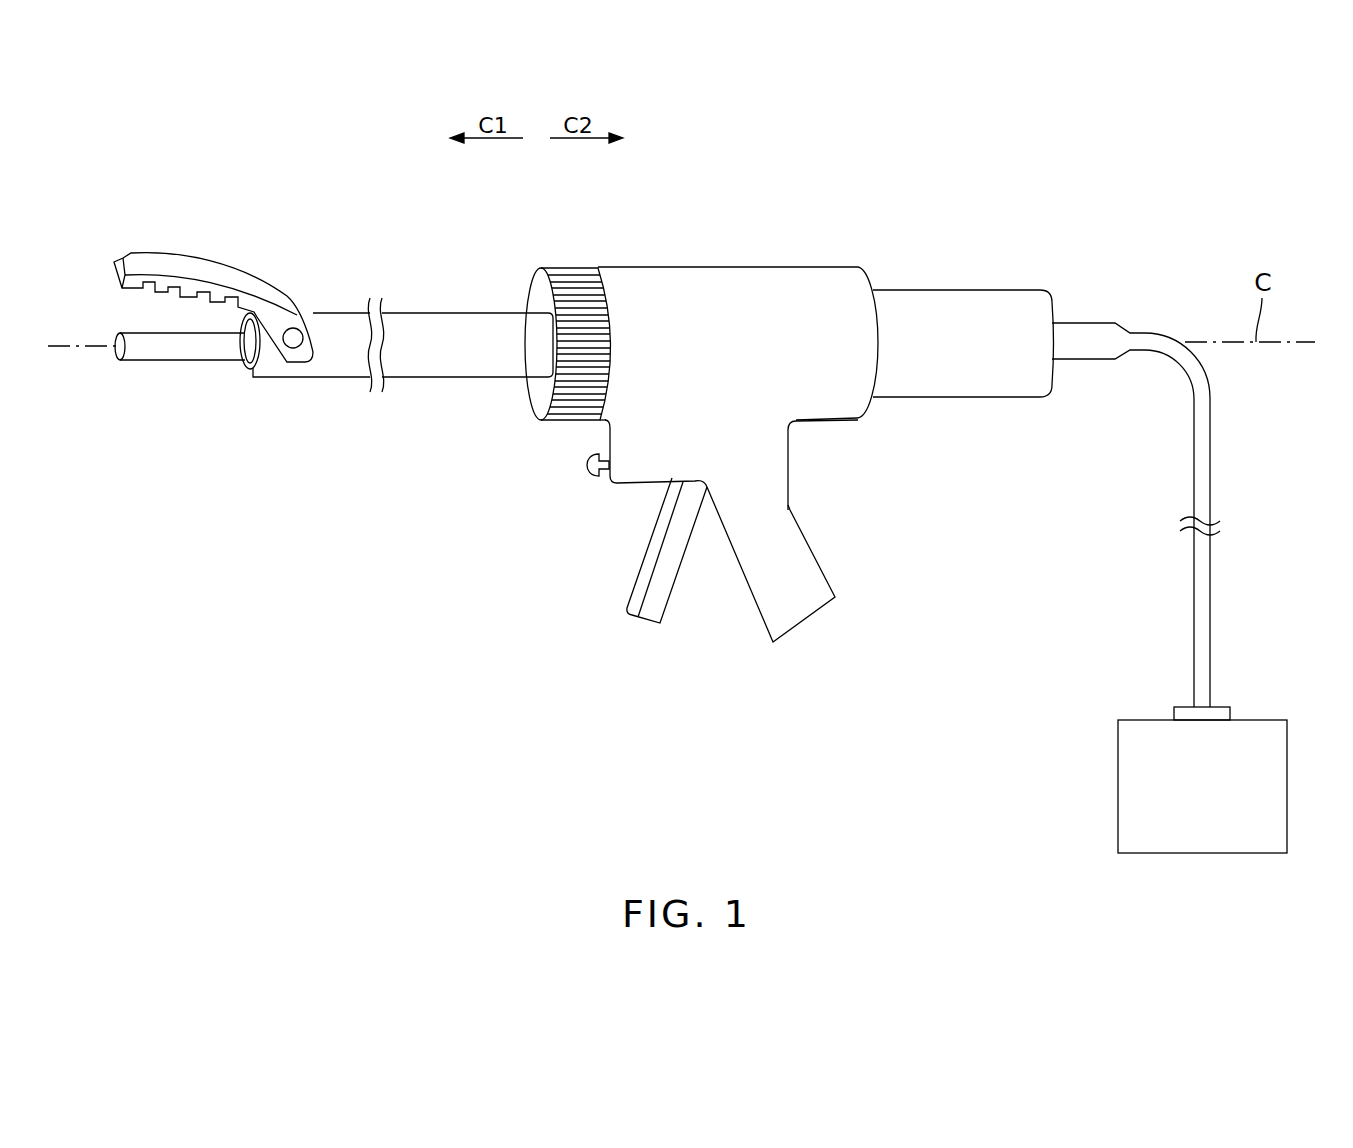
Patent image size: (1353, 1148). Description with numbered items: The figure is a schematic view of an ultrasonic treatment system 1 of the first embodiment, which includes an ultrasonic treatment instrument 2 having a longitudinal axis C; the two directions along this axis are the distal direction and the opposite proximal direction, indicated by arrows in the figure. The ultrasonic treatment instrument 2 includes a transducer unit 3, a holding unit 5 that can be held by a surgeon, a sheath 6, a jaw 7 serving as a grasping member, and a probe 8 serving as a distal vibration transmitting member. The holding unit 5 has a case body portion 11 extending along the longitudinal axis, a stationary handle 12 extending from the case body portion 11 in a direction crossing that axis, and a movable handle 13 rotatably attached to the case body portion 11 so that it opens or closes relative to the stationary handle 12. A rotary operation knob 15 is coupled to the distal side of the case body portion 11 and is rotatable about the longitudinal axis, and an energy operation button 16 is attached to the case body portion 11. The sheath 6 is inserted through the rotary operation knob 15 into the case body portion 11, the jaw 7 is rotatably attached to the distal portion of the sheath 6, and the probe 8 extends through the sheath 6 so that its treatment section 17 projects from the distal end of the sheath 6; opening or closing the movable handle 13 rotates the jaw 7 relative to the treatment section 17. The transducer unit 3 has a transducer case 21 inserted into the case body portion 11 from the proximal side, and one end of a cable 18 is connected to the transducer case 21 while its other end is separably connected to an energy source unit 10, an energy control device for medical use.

The ultrasonic treatment system 1 is at (1230, 200).
The ultrasonic treatment instrument 2 is at (881, 239).
The transducer unit 3 is at (938, 302).
The holding unit 5 is at (776, 280).
The sheath 6 is at (441, 362).
The jaw 7 is at (237, 268).
The probe 8 is at (219, 345).
The energy source unit 10 is at (1266, 729).
The case body portion 11 is at (828, 405).
The stationary handle 12 is at (805, 572).
The movable handle 13 is at (660, 598).
The rotary operation knob 15 is at (578, 280).
The energy operation button 16 is at (588, 467).
The treatment section 17 is at (172, 360).
The cable 18 is at (1210, 410).
The transducer case 21 is at (950, 383).